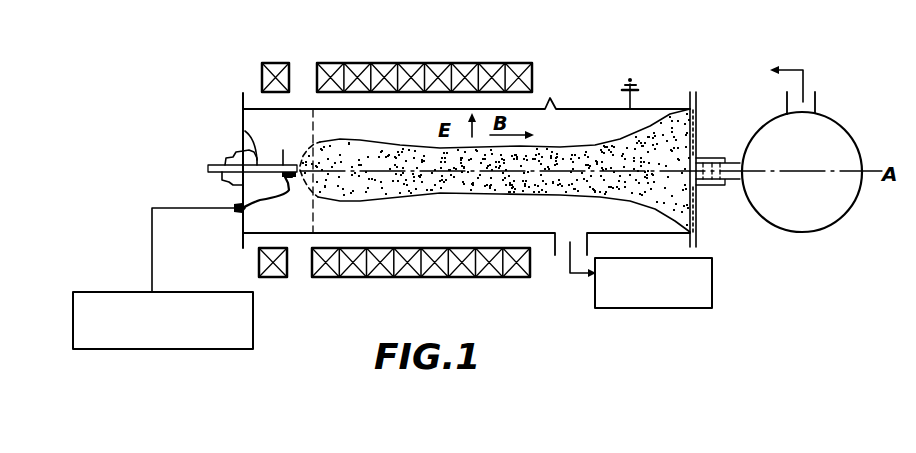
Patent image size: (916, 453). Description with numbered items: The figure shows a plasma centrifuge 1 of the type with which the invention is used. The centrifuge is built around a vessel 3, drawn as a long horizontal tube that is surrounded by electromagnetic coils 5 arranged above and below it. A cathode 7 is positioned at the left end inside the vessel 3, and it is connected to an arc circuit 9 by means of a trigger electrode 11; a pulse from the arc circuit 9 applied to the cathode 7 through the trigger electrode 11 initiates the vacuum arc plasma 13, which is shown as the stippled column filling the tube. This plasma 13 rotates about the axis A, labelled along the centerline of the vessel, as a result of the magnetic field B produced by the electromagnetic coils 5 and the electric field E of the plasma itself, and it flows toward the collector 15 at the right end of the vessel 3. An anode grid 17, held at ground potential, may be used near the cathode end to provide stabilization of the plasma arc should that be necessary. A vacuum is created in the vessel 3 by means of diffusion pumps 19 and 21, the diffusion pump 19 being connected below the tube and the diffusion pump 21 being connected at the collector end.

The plasma centrifuge 1 is at (582, 86).
The vessel 3 is at (650, 109).
The electromagnetic coils 5 is at (283, 62).
The cathode 7 is at (245, 131).
The arc circuit 9 is at (93, 292).
The trigger electrode 11 is at (283, 150).
The vacuum arc plasma 13 is at (413, 196).
The collector 15 is at (691, 129).
The anode grid 17 is at (310, 218).
The diffusion pump 19 is at (712, 290).
The diffusion pump 21 is at (830, 117).